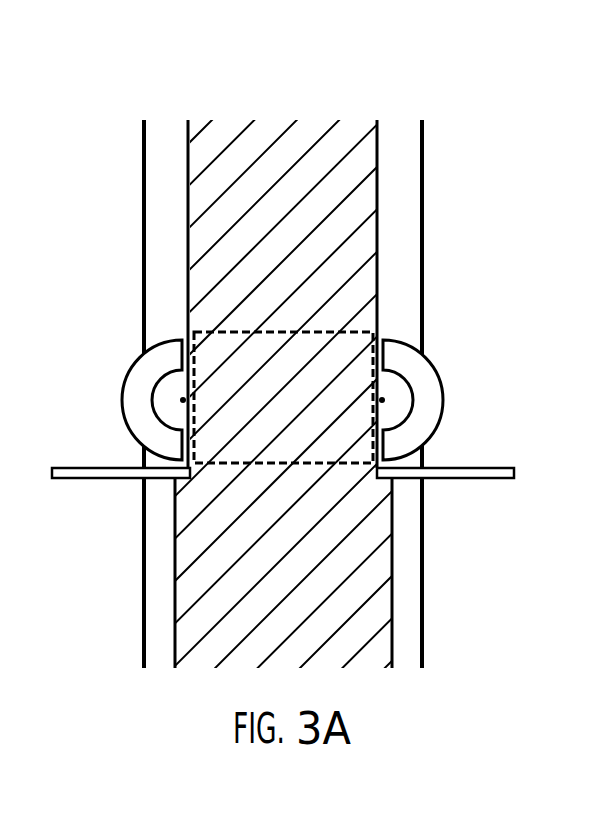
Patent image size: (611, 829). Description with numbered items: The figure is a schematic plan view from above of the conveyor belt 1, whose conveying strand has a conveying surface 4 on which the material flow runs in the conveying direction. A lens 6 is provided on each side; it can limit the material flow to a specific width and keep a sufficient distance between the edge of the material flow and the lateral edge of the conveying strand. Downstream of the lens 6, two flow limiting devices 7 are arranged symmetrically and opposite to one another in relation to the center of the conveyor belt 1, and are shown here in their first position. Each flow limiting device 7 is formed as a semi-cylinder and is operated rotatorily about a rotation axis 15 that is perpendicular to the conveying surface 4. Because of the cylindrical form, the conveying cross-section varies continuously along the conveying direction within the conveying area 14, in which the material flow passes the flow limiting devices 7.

The conveyor belt 1 is at (424, 300).
The conveying surface 4 is at (157, 280).
The lens 6 is at (85, 480).
The flow limiting device 7 is at (143, 370).
The conveying area 14 is at (217, 331).
The rotation axis 15 is at (181, 401).